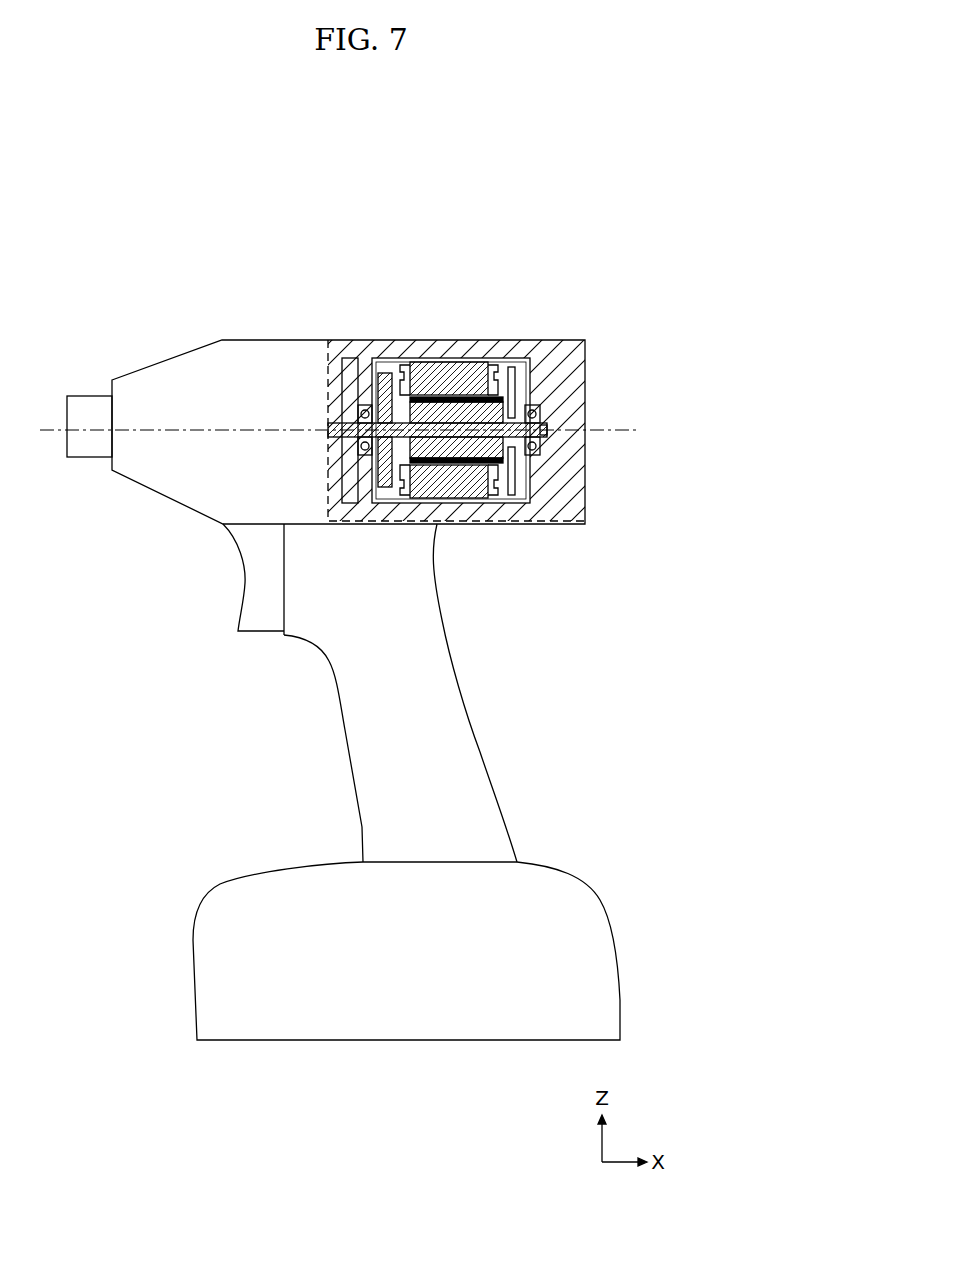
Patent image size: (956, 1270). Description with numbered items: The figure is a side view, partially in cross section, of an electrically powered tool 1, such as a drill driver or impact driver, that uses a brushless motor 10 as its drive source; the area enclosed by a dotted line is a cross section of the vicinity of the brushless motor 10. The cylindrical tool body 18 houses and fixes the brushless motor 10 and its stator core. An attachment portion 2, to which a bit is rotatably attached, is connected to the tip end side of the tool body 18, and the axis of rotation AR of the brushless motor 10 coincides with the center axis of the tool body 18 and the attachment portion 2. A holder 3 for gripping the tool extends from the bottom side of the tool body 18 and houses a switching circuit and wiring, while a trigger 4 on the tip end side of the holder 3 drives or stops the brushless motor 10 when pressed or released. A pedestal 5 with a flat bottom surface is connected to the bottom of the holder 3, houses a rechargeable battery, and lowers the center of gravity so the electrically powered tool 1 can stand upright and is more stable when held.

The electrically powered tool 1 is at (562, 297).
The attachment portion 2 is at (90, 443).
The holder 3 is at (448, 693).
The trigger 4 is at (265, 613).
The pedestal 5 is at (560, 883).
The brushless motor 10 is at (451, 381).
The tool body 18 is at (272, 375).
The axis of rotation AR is at (610, 427).